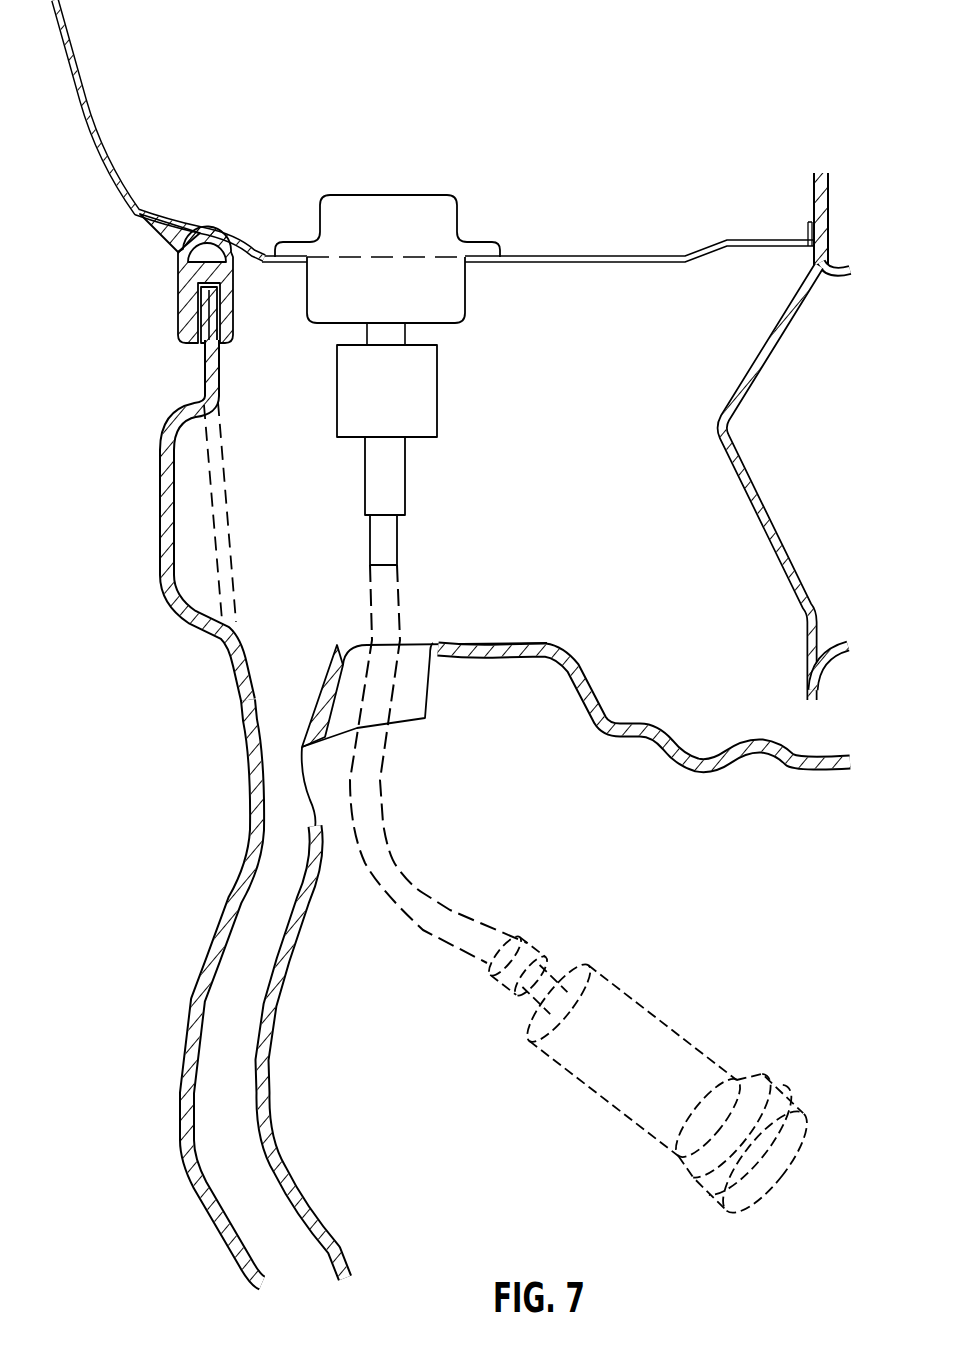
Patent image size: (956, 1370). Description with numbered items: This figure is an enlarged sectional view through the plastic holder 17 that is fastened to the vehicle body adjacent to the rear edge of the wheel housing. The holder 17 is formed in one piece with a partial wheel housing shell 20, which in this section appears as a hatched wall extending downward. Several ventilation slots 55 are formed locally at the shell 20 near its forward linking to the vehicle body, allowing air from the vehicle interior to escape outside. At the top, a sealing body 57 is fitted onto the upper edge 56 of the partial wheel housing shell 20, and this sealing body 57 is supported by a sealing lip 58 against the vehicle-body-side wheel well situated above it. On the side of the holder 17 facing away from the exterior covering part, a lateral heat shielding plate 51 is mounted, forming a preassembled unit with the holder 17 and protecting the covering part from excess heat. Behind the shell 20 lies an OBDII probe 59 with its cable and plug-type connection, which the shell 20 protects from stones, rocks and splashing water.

The holder 17 is at (246, 833).
The partial wheel housing shell 20 is at (237, 678).
The lateral heat shielding plate 51 is at (268, 1020).
The ventilation slots 55 is at (198, 535).
The upper edge 56 is at (225, 302).
The sealing body 57 is at (183, 283).
The sealing lip 58 is at (155, 235).
The OBDII probe 59 is at (658, 990).